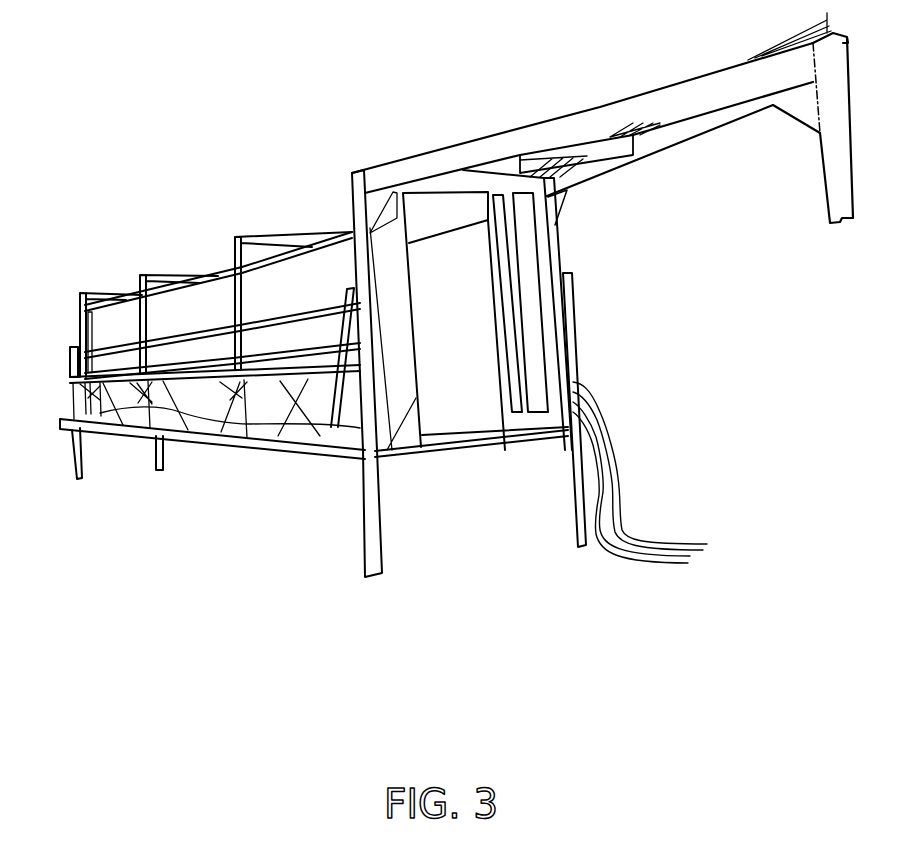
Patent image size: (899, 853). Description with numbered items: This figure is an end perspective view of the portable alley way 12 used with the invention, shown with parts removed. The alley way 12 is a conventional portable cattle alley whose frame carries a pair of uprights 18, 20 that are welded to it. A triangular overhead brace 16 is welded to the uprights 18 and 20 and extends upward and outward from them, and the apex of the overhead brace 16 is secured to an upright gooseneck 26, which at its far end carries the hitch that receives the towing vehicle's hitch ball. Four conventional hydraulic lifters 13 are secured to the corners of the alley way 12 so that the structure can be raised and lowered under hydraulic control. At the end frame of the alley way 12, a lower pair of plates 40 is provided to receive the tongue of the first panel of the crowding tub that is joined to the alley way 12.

The portable alley way 12 is at (196, 297).
The hydraulic lifters 13 is at (72, 474).
The triangular overhead brace 16 is at (543, 133).
The upright 18 is at (355, 215).
The upright 20 is at (358, 260).
The upright gooseneck 26 is at (833, 153).
The lower pair of plates 40 is at (457, 447).